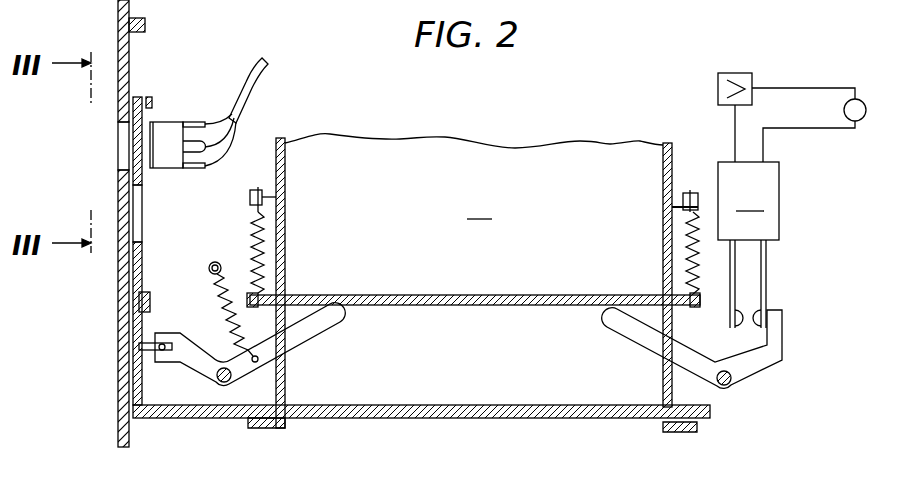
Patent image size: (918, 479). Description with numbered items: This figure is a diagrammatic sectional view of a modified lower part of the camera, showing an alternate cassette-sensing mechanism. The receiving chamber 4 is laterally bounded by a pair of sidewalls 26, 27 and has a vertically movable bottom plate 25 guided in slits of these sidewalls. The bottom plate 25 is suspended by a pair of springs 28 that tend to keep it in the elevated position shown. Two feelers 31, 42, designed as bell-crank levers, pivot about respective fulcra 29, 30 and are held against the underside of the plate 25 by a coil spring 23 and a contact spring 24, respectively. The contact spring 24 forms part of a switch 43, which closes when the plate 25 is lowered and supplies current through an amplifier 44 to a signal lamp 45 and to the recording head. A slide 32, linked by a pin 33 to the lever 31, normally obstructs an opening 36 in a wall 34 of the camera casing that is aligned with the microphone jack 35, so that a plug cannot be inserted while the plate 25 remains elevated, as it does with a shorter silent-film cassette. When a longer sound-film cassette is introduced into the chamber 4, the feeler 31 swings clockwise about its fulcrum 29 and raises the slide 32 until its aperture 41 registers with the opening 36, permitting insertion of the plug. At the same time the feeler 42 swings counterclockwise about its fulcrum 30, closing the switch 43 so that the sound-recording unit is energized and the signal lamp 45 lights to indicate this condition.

The receiving chamber 4 is at (474, 177).
The coil spring 23 is at (227, 312).
The contact spring 24 is at (770, 270).
The bottom plate 25 is at (450, 296).
The sidewall 26 is at (663, 160).
The sidewall 27 is at (287, 162).
The springs 28 is at (250, 235).
The fulcrum 29 is at (215, 378).
The fulcrum 30 is at (732, 383).
The feeler 31 is at (315, 330).
The slide 32 is at (135, 385).
The pin 33 is at (165, 335).
The wall 34 is at (125, 300).
The microphone jack 35 is at (168, 128).
The opening 36 is at (120, 138).
The aperture 41 is at (142, 212).
The feeler 42 is at (640, 338).
The switch 43 is at (786, 172).
The amplifier 44 is at (733, 73).
The signal lamp 45 is at (843, 110).